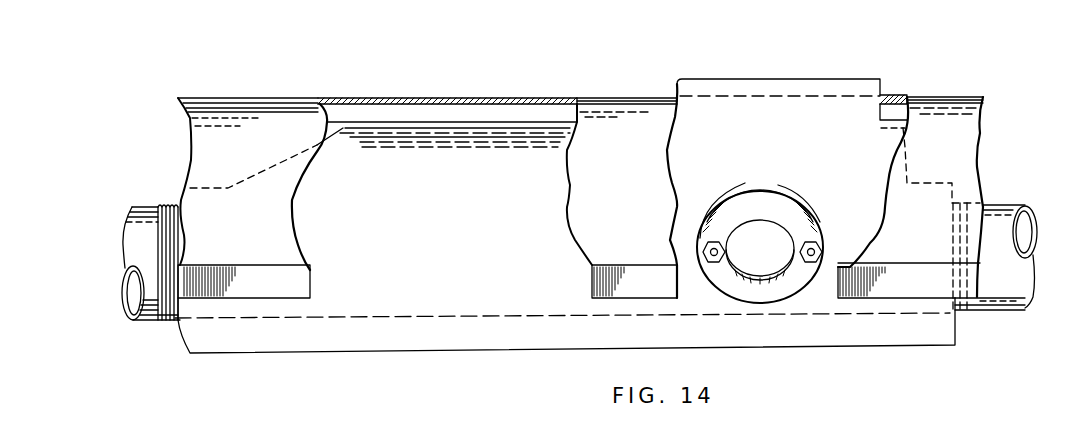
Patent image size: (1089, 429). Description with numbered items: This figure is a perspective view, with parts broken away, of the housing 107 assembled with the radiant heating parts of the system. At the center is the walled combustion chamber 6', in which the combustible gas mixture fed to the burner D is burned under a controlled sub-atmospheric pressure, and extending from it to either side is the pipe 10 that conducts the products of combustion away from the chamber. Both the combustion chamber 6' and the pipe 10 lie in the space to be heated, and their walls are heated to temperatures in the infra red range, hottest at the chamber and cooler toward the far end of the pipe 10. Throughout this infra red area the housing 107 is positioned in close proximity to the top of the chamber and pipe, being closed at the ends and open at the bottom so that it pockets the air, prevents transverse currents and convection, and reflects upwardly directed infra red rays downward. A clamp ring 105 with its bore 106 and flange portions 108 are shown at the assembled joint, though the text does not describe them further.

The combustion chamber 6' is at (579, 207).
The pipe 10 is at (158, 206).
The clamp ring 105 is at (778, 190).
The bore 106 is at (778, 243).
The housing 107 is at (520, 98).
The flange 108 is at (643, 280).
The burner D is at (861, 89).